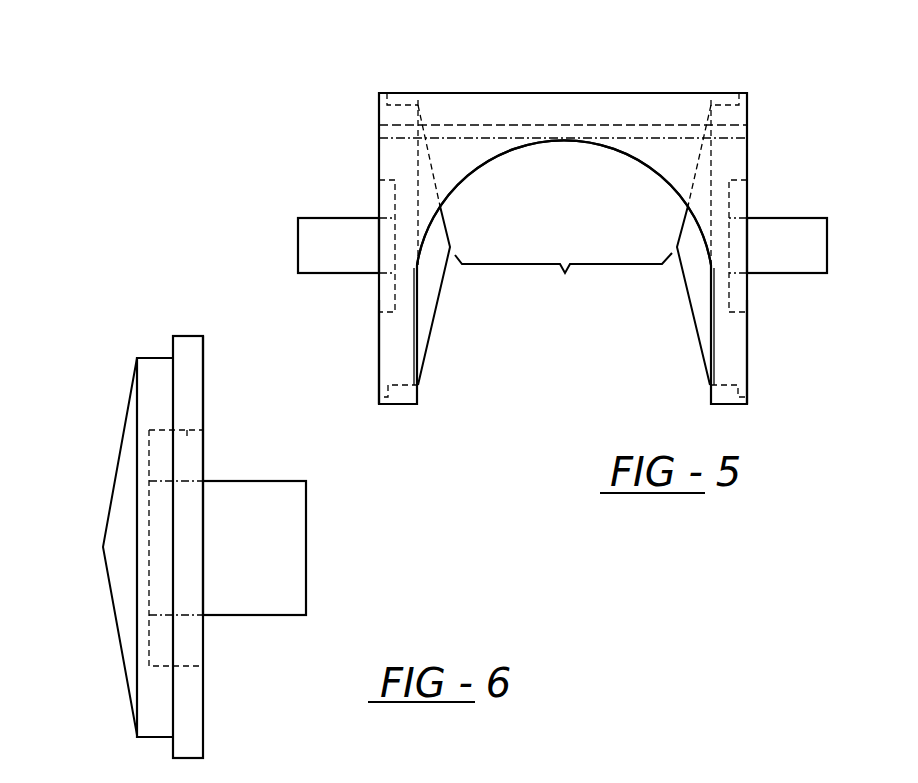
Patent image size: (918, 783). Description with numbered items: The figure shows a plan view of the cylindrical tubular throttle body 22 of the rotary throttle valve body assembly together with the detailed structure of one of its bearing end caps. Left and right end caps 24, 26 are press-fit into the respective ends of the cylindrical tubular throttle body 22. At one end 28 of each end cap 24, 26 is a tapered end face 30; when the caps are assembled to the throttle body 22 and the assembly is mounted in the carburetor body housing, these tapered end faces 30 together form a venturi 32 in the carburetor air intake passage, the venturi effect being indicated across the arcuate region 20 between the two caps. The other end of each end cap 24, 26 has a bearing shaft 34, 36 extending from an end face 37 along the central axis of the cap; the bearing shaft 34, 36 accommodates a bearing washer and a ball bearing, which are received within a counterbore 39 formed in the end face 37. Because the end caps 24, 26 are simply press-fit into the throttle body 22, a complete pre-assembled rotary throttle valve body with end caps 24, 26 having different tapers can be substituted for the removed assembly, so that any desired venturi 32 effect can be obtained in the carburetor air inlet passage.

In FIG. 5, the arcuate cutout / dome opening 20 is at (467, 180).
In FIG. 5, the cylindrical tubular throttle body 22 is at (595, 93).
In FIG. 5, the left end cap 24 is at (379, 323).
In FIG. 5, the right end cap 26 is at (747, 353).
In FIG. 6, the right end cap 26 is at (203, 706).
In FIG. 5, the one end of end cap 28 is at (403, 108).
In FIG. 6, the one end of end cap 28 is at (137, 358).
In FIG. 5, the tapered end face 30 is at (433, 325).
In FIG. 6, the tapered end face 30 is at (118, 476).
In FIG. 5, the venturi 32 is at (563, 277).
In FIG. 5, the bearing shaft 34 is at (344, 216).
In FIG. 5, the bearing shaft 36 is at (787, 218).
In FIG. 6, the bearing shaft 36 is at (306, 562).
In FIG. 6, the end face 37 is at (203, 388).
In FIG. 6, the counterbore 39 is at (187, 430).